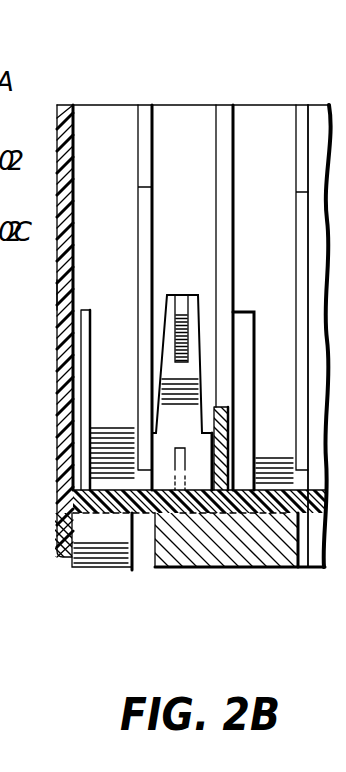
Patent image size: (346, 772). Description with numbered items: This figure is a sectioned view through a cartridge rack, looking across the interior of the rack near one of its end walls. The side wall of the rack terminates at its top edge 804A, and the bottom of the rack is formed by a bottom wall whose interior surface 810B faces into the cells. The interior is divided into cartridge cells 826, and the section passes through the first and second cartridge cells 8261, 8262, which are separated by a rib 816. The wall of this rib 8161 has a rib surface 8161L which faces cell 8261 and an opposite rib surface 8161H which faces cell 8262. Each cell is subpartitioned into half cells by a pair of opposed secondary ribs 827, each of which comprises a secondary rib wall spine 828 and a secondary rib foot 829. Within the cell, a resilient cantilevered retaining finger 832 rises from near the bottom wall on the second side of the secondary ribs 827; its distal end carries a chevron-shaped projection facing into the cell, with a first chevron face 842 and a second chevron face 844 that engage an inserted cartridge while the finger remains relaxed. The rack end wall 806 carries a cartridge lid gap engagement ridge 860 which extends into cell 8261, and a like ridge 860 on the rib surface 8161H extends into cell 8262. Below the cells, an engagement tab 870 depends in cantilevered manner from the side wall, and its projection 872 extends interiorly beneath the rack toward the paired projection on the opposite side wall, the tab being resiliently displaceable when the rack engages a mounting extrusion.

The top edge of side wall 804A is at (87, 104).
The cartridge cell 826 is at (197, 290).
The first cartridge cell 8261 is at (135, 252).
The second cartridge cell 8262 is at (280, 84).
The rib 816 is at (227, 274).
The first rib 8161 is at (227, 274).
The rib surface facing lower order cell 8161L is at (216, 210).
The rib surface facing higher order cell 8161H is at (234, 194).
The secondary rib 827 is at (138, 207).
The secondary rib wall spine 828 is at (141, 269).
The second chevron face 844 is at (173, 343).
The retaining finger 832 is at (186, 311).
The first chevron face 842 is at (203, 305).
The end wall 806 is at (58, 293).
The cartridge lid gap engagement ridge 860 is at (81, 362).
The secondary rib foot 829 is at (143, 481).
The engagement tab 870 is at (88, 583).
The engagement tab projection 872 is at (117, 570).
The interior surface of bottom wall 810B is at (192, 570).